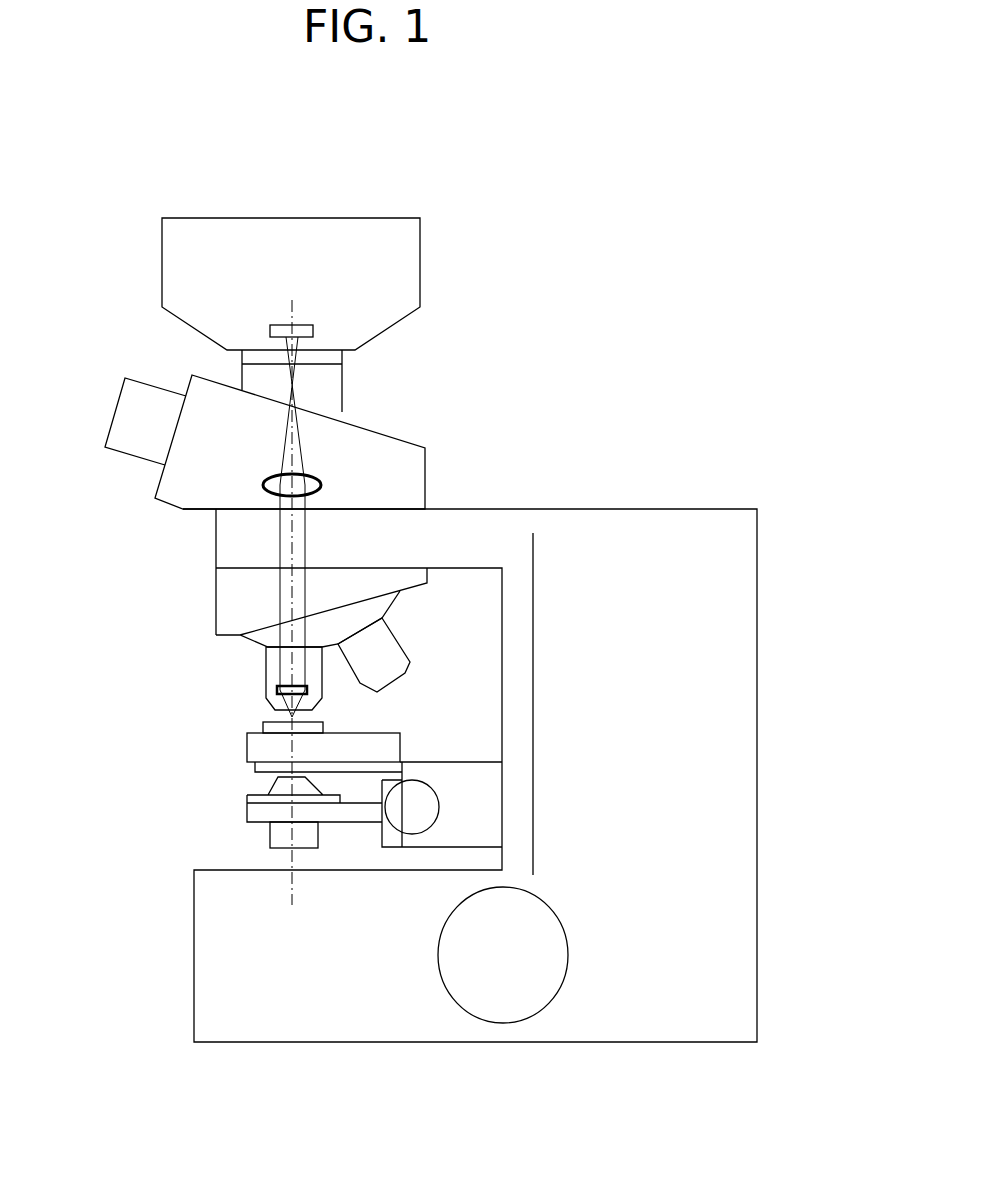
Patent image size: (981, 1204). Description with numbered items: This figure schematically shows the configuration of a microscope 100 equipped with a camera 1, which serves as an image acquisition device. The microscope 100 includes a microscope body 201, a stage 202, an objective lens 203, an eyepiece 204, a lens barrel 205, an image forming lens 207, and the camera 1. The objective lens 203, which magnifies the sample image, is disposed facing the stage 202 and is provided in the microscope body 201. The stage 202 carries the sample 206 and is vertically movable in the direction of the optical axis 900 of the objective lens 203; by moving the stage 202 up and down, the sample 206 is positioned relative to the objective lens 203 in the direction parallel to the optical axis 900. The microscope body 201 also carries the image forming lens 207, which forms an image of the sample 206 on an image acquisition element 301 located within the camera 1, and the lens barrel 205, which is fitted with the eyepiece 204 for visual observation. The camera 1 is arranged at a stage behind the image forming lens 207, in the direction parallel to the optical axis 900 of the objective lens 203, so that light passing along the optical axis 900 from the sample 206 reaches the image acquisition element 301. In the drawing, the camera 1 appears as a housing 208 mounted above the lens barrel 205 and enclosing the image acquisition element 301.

The camera 1 is at (341, 204).
The microscope 100 is at (664, 284).
The microscope body 201 is at (630, 509).
The stage 202 is at (247, 752).
The objective lens 203 is at (266, 672).
The eyepiece 204 is at (113, 412).
The lens barrel 205 is at (159, 486).
The sample 206 is at (263, 727).
The image forming lens 207 is at (322, 485).
The housing 208 is at (420, 257).
The image acquisition element 301 is at (303, 323).
The optical axis 900 is at (290, 477).